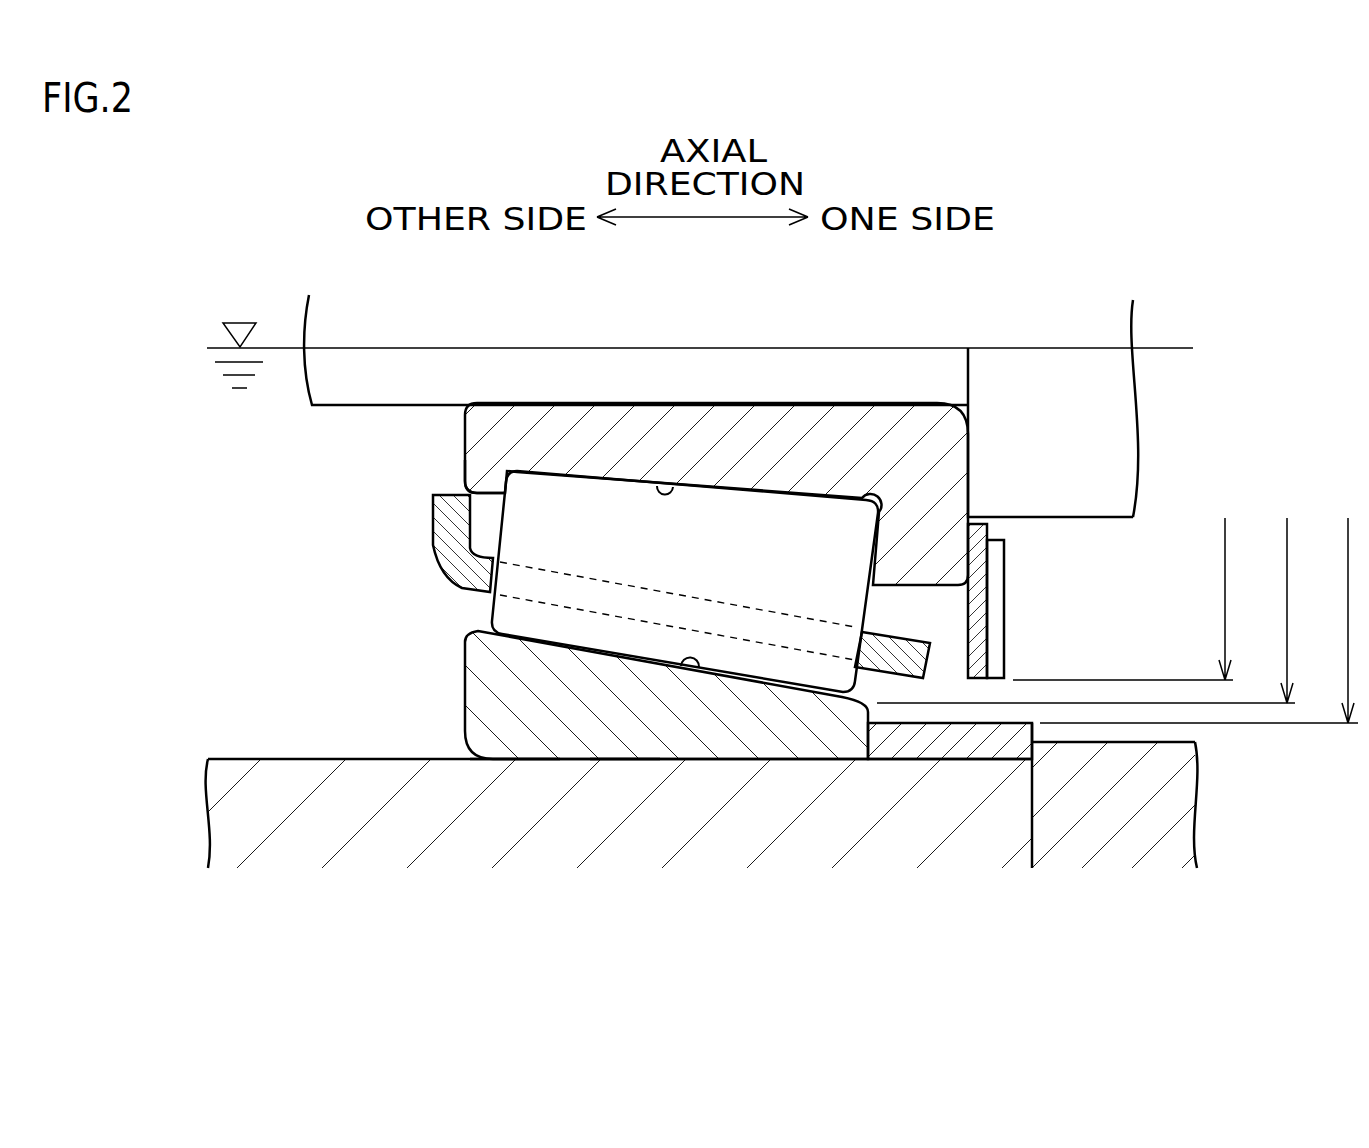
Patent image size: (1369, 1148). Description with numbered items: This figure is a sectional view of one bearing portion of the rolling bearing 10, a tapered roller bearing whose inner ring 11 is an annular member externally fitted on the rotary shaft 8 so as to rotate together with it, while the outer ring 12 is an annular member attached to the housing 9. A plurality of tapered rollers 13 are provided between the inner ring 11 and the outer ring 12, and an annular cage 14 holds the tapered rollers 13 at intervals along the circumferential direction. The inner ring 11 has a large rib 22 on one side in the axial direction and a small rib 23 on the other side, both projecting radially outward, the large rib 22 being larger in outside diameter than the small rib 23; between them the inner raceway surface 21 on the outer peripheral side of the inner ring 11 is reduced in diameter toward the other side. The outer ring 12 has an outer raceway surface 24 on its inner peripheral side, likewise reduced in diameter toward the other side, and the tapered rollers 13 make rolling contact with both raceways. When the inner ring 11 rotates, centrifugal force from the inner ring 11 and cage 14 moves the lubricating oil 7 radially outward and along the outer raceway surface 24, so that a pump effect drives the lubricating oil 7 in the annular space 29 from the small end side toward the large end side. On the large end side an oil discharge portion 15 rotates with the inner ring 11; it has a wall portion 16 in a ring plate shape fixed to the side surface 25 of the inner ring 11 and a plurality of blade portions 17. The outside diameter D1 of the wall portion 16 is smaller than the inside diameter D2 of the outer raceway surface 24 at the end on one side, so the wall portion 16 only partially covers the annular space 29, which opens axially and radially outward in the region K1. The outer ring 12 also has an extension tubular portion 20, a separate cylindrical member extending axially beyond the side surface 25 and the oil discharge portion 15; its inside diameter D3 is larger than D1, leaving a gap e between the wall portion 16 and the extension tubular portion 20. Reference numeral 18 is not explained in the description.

The lubricating oil 7 is at (324, 575).
The rotary shaft 8 is at (1048, 380).
The housing 9 is at (295, 759).
The rolling bearing 10 is at (519, 778).
The inner ring 11 is at (572, 402).
The outer ring 12 is at (625, 760).
The tapered rollers 13 is at (667, 720).
The cage 14 is at (445, 570).
The oil discharge portion 15 is at (1053, 600).
The wall portion 16 is at (978, 592).
The blade portions 17 is at (1037, 650).
The seal member 18 is at (1005, 565).
The extension tubular portion 20 is at (930, 748).
The inner raceway surface 21 is at (665, 490).
The large rib 22 is at (680, 495).
The small rib 23 is at (488, 480).
The outer raceway surface 24 is at (692, 660).
The side surface 25 is at (1003, 548).
The annular space 29 is at (459, 623).
The gap e is at (970, 678).
The region K1 is at (985, 737).
The outside diameter D1 is at (1123, 599).
The inside diameter D2 is at (1274, 610).
The inside diameter D3 is at (1199, 620).